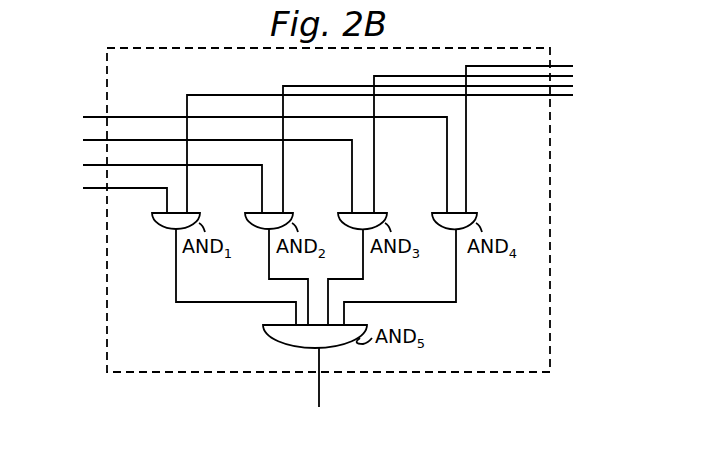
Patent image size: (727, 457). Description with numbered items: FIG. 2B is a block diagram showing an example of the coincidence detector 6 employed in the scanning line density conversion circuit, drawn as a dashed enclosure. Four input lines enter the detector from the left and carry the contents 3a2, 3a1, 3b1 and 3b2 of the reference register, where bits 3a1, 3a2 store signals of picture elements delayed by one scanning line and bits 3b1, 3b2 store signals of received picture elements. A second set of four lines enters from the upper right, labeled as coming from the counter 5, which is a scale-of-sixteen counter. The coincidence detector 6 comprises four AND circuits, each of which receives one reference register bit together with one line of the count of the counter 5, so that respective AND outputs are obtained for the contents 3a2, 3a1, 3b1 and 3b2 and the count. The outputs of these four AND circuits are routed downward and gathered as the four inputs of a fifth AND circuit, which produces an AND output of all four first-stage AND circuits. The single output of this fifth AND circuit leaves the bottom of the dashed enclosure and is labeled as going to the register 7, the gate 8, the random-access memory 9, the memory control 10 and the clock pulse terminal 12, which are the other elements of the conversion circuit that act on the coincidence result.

The bit of register 3a 3a1 is at (190, 168).
The bit of register 3a 3a2 is at (237, 159).
The bit of register 3b 3b1 is at (145, 182).
The bit of register 3b 3b2 is at (97, 195).
The counter 5 is at (575, 63).
The coincidence detector 6 is at (600, 243).
The register 7 is at (398, 392).
The gate 8 is at (398, 392).
The random-access memory 9 is at (398, 392).
The memory control 10 is at (398, 392).
The clock pulse terminal 12 is at (398, 392).